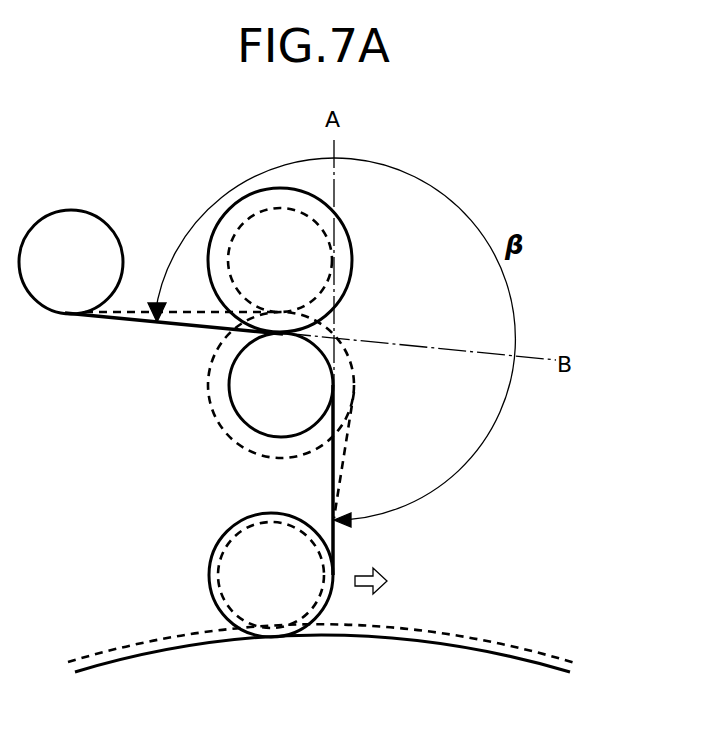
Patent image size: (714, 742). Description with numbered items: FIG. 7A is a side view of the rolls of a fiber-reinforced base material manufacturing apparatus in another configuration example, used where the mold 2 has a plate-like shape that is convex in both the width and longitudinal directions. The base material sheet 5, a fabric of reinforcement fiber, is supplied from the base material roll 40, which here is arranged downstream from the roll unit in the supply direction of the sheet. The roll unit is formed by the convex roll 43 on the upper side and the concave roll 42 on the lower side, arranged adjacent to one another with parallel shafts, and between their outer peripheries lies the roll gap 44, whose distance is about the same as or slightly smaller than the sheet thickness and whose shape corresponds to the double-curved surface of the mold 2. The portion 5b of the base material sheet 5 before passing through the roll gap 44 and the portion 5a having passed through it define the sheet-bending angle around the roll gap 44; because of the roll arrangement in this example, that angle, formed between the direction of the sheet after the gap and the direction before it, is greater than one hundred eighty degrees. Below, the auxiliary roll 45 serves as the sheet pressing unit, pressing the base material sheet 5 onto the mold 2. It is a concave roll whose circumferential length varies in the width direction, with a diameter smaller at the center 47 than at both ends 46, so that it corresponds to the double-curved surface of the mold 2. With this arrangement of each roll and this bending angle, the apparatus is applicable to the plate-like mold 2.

The mold 2 is at (492, 646).
The base material sheet 5 is at (335, 462).
The portion of the base material sheet having passed through the roll gap 5a is at (338, 482).
The portion of the base material sheet before passing through the roll gap 5b is at (173, 328).
The base material roll 40 is at (62, 223).
The concave roll 42 is at (313, 385).
The convex roll 43 is at (313, 268).
The roll gap 44 is at (333, 334).
The auxiliary roll 45 is at (272, 602).
The both ends of the auxiliary roll 46 is at (218, 573).
The center of the auxiliary roll 47 is at (232, 523).